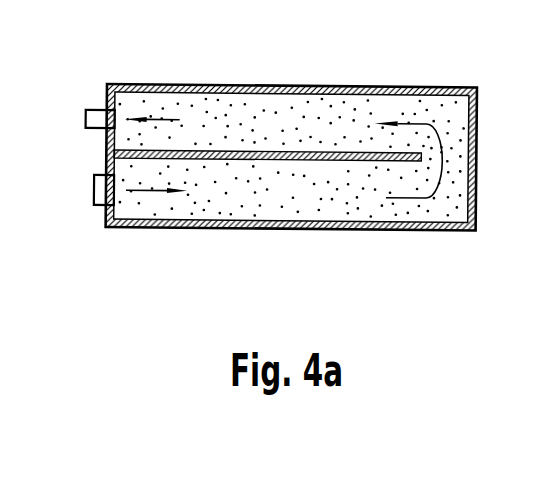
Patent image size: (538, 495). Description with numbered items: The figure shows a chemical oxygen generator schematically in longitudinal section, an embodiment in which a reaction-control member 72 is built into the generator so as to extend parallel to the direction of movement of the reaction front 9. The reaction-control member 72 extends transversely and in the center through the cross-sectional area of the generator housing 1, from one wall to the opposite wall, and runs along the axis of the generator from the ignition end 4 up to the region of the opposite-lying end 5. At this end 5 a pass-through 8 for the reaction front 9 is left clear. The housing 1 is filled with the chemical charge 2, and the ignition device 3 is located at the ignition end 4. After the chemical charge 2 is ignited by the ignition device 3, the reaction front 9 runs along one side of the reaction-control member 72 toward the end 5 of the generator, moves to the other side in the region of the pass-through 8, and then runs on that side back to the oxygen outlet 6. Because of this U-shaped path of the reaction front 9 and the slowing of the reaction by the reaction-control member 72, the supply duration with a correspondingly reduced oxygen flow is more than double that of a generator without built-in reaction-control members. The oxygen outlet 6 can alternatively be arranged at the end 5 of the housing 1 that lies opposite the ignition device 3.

The generator housing 1 is at (375, 90).
The chemical charge 2 is at (327, 208).
The ignition device 3 is at (100, 192).
The ignition end 4 is at (107, 167).
The opposite-lying end 5 is at (478, 153).
The oxygen outlet 6 is at (95, 118).
The pass-through 8 is at (453, 155).
The reaction front 9 is at (164, 118).
The reaction-control member 72 is at (272, 152).